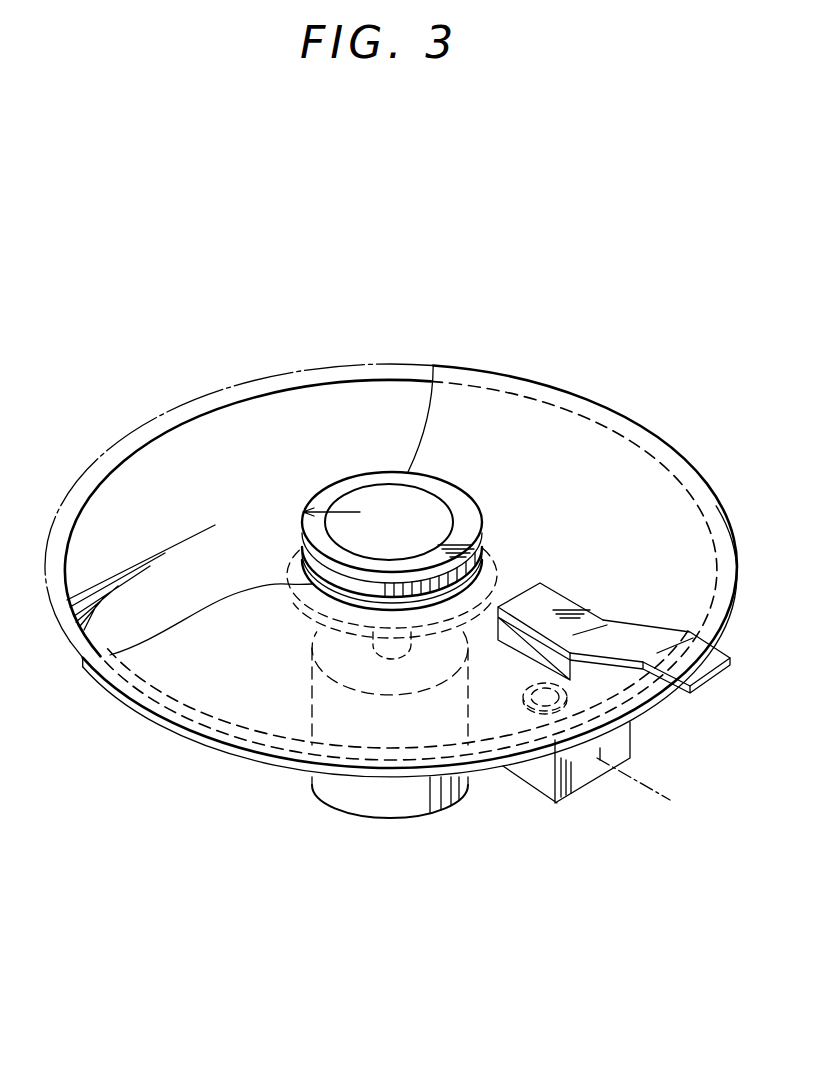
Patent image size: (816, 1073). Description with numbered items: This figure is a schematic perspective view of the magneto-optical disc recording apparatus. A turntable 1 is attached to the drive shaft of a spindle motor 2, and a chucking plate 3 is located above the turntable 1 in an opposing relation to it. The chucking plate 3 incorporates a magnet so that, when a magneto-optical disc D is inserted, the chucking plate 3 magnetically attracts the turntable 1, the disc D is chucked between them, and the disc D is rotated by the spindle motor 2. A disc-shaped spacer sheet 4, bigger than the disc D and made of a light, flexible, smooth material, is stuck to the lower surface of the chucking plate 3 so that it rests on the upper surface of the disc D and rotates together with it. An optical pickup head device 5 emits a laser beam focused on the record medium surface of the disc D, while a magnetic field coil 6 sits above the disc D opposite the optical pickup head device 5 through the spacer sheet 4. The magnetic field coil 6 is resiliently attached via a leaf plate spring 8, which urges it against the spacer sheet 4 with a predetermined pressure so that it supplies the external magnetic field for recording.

The magneto-optical disc D is at (265, 407).
The turntable 1 is at (293, 607).
The spindle motor 2 is at (353, 803).
The chucking plate 3 is at (433, 512).
The spacer sheet 4 is at (588, 398).
The optical pickup head device 5 is at (530, 777).
The magnetic field coil 6 is at (533, 640).
The leaf plate spring 8 is at (647, 630).